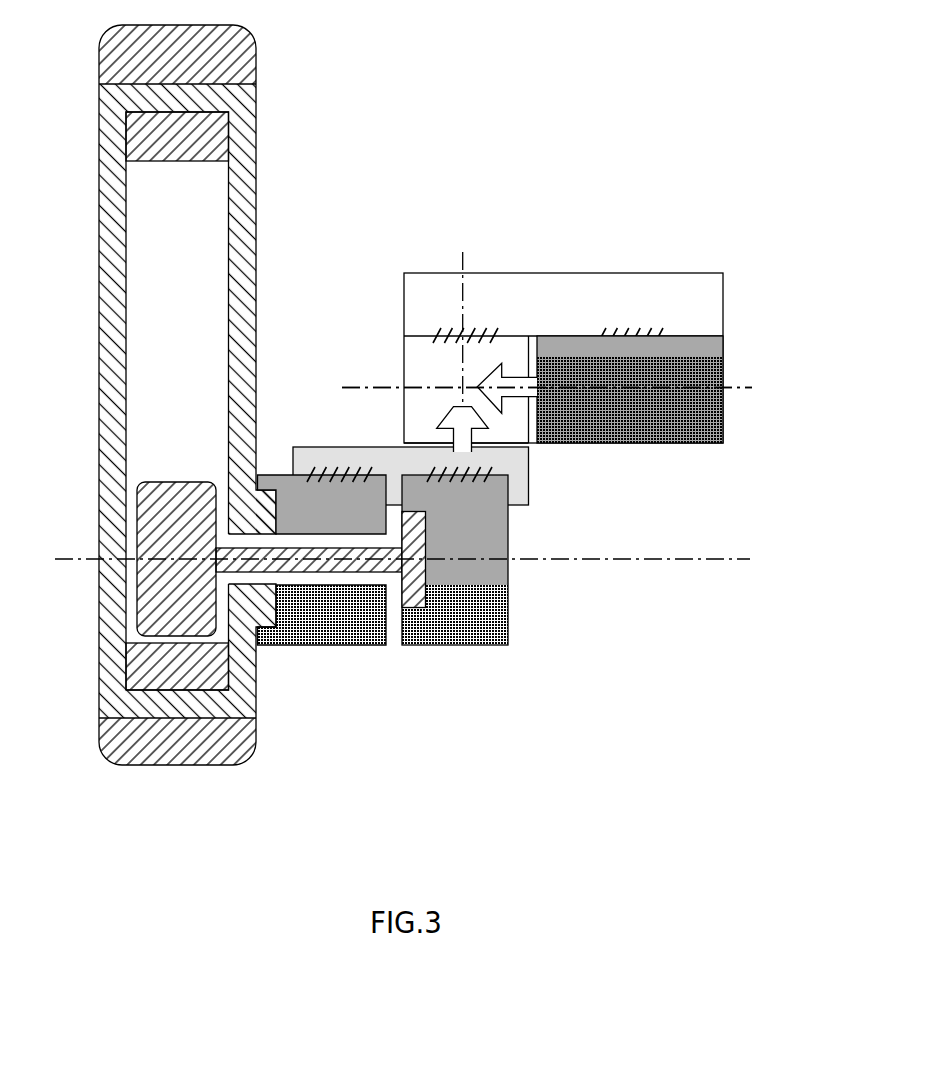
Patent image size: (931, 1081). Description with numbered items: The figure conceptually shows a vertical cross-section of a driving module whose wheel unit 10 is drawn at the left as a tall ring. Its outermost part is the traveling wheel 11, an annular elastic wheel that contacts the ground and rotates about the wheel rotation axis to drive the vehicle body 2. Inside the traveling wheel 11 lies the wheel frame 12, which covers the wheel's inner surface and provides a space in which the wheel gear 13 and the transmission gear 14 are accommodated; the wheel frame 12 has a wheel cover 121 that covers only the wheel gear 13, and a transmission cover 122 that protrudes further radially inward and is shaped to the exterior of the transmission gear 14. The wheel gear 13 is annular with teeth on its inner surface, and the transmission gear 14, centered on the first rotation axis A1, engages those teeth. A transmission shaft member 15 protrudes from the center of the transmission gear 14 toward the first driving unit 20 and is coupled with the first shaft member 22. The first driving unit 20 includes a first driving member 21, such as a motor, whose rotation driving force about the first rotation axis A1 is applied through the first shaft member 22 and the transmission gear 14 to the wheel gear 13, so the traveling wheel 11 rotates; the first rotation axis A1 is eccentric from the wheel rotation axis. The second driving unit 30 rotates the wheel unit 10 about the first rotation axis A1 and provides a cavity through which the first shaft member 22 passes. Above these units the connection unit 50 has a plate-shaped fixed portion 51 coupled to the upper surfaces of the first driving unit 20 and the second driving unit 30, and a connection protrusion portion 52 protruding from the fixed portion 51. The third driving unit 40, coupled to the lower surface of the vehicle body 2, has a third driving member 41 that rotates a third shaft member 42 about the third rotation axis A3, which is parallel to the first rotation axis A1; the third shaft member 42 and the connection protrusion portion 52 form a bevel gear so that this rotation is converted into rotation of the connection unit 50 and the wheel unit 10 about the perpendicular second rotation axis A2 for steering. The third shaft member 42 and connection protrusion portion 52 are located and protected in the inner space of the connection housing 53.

The vehicle body 2 is at (742, 305).
The wheel unit 10 is at (175, 428).
The traveling wheel 11 is at (208, 748).
The wheel frame 12 is at (78, 215).
The wheel cover 121 is at (128, 153).
The transmission cover 122 is at (242, 500).
The wheel gear 13 is at (145, 670).
The transmission gear 14 is at (155, 520).
The transmission shaft member 15 is at (243, 547).
The first driving unit 20 is at (455, 608).
The first driving member 21 is at (438, 647).
The first shaft member 22 is at (396, 585).
The second driving unit 30 is at (328, 654).
The third driving unit 40 is at (678, 419).
The third driving member 41 is at (627, 436).
The third shaft member 42 is at (517, 377).
The connection unit 50 is at (376, 372).
The fixed portion 51 is at (355, 446).
The connection protrusion portion 52 is at (445, 407).
The connection housing 53 is at (497, 340).
The first rotation axis A1 is at (419, 559).
The second rotation axis A2 is at (461, 314).
The third rotation axis A3 is at (582, 387).